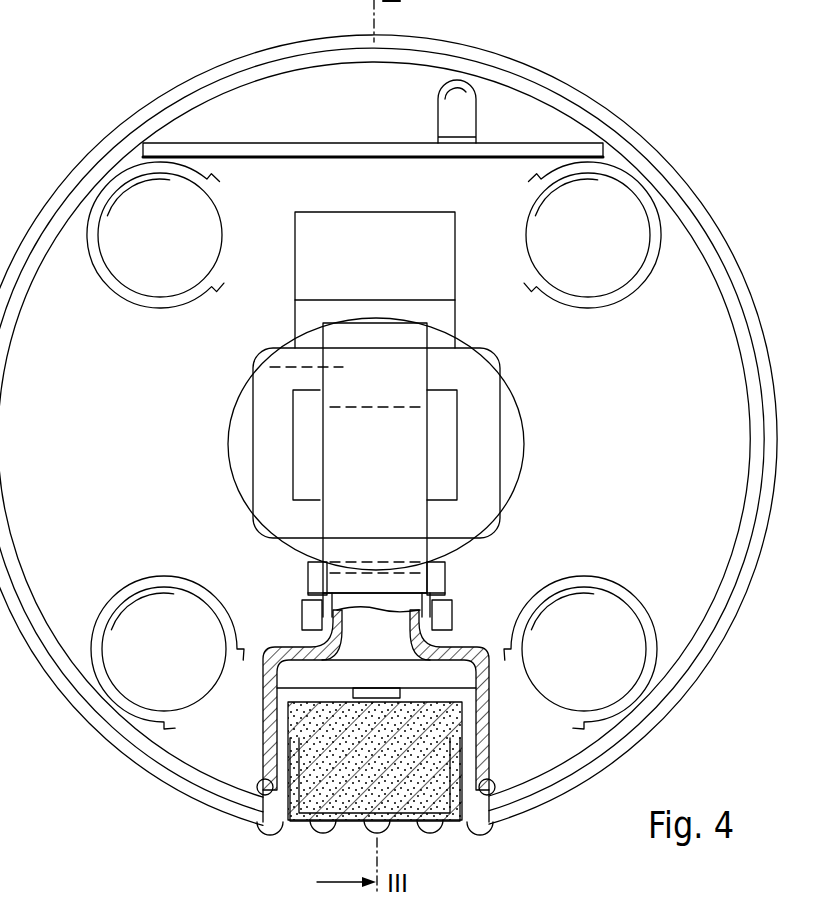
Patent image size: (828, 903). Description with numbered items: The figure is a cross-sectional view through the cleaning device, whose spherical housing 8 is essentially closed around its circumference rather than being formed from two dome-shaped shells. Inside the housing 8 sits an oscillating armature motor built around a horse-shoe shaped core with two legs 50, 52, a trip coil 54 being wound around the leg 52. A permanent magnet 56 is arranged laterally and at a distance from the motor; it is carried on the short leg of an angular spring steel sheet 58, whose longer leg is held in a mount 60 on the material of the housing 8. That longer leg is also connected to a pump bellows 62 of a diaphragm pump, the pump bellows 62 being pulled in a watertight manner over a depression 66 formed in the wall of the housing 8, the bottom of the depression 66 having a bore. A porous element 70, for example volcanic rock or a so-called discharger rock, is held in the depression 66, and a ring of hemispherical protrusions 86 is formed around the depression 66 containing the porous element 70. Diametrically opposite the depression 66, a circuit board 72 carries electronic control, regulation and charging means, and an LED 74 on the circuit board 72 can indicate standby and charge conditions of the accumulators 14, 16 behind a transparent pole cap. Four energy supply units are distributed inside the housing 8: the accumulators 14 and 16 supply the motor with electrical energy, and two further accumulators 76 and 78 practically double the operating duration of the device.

The housing 8 is at (666, 133).
The accumulator 14 is at (627, 217).
The accumulator 16 is at (613, 685).
The leg 50 is at (424, 265).
The leg 52 is at (445, 463).
The trip coil 54 is at (487, 400).
The permanent magnet 56 is at (263, 368).
The spring steel sheet 58 is at (340, 449).
The mount 60 is at (452, 612).
The pump bellows 62 is at (480, 700).
The depression 66 is at (294, 838).
The porous element 70 is at (407, 817).
The circuit board 72 is at (312, 147).
The LED 74 is at (446, 113).
The accumulator 76 is at (130, 192).
The accumulator 78 is at (135, 685).
The hemispherical protrusions 86 is at (318, 837).